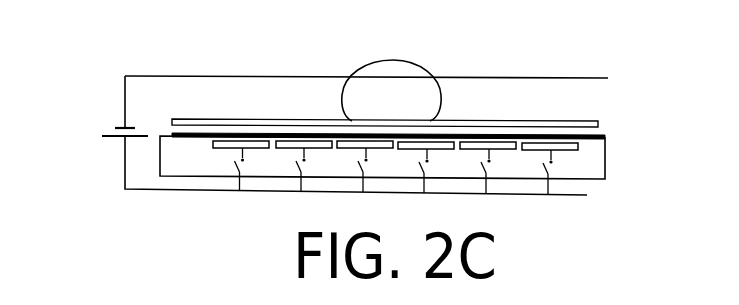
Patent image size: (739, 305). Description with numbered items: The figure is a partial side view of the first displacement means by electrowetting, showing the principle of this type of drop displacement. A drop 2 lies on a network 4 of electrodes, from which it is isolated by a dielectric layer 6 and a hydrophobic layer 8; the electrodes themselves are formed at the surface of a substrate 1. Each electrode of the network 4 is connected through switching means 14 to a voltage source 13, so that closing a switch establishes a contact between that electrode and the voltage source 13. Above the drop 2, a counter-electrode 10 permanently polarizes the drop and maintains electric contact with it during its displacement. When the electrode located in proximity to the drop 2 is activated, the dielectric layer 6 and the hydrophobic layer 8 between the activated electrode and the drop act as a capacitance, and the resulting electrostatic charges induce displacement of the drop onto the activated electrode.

The substrate 1 is at (582, 167).
The drop 2 is at (355, 97).
The network of electrodes 4 is at (292, 149).
The dielectric layer 6 is at (607, 138).
The hydrophobic layer 8 is at (596, 122).
The counter-electrode 10 is at (486, 77).
The voltage source 13 is at (120, 126).
The switching means 14 is at (483, 166).